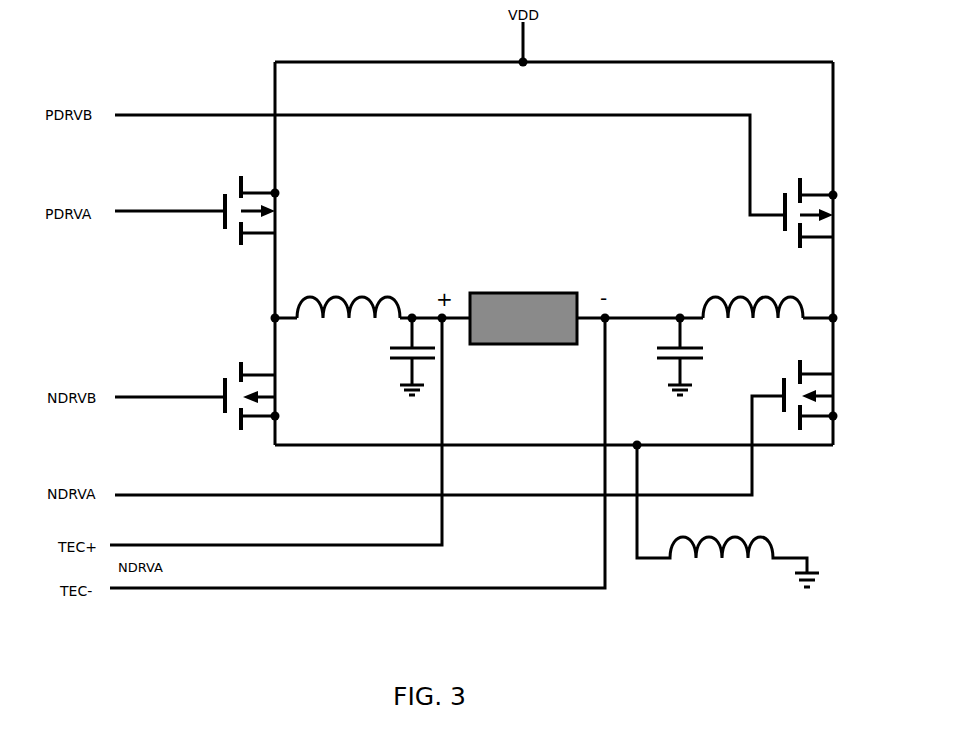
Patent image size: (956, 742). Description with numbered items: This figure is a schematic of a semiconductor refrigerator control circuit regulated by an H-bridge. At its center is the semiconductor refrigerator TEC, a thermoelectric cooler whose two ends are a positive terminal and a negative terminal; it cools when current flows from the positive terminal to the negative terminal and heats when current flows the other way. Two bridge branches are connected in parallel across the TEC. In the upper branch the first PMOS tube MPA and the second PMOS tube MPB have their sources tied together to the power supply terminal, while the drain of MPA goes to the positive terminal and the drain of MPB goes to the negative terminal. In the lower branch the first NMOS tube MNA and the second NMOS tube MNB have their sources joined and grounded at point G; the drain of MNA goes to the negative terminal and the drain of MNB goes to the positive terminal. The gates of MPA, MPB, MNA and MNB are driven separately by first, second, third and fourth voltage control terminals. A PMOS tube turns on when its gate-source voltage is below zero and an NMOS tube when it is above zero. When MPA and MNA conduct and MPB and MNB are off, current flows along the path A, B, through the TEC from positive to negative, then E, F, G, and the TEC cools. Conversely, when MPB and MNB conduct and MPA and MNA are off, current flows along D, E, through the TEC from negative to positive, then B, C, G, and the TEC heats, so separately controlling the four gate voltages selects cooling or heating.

The first PMOS tube MPA is at (225, 208).
The second PMOS tube MPB is at (801, 199).
The first NMOS tube MNA is at (800, 382).
The second NMOS tube MNB is at (223, 391).
The semiconductor refrigerator TEC is at (523, 318).
The point A is at (285, 183).
The point B is at (287, 332).
The point C is at (292, 421).
The point D is at (844, 182).
The point E is at (845, 332).
The point F is at (849, 416).
The point G is at (636, 433).